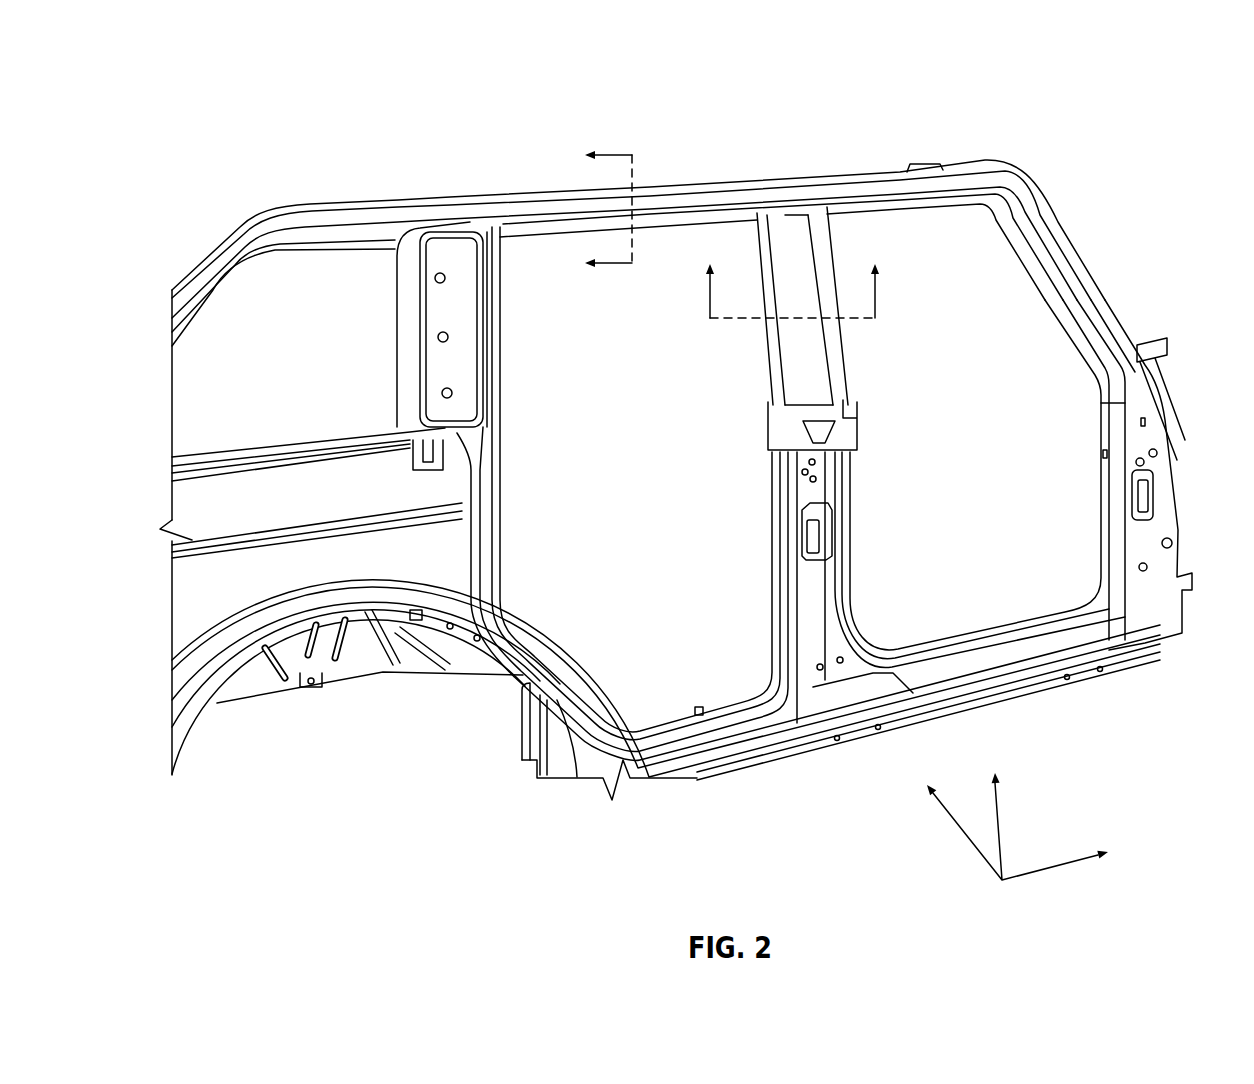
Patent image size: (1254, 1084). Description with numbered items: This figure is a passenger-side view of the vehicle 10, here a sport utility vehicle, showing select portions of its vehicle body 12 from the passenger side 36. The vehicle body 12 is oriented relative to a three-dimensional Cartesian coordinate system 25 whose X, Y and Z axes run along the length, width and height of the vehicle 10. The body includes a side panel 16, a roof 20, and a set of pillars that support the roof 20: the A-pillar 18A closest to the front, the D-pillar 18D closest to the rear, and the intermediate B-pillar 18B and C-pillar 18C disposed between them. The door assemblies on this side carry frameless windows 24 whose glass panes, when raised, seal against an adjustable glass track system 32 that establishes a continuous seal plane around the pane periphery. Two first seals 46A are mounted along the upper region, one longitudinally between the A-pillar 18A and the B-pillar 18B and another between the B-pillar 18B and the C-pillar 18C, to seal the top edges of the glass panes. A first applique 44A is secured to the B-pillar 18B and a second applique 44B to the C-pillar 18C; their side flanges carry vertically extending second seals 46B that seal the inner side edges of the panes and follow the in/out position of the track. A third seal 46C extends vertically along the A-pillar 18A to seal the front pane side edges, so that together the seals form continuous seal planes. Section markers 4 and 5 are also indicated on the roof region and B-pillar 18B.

The vehicle 10 is at (1078, 74).
The vehicle body 12 is at (640, 780).
The side panel 16 is at (207, 597).
The A-pillar 18A is at (1120, 322).
The B-pillar 18B is at (827, 483).
The C-pillar 18C is at (487, 520).
The D-pillar 18D is at (212, 290).
The roof 20 is at (472, 165).
The frameless window 24 is at (652, 262).
The Cartesian coordinate system 25 is at (995, 895).
The adjustable glass track system 32 is at (758, 200).
The passenger side 36 is at (1112, 676).
The first applique 44A is at (825, 333).
The second applique 44B is at (437, 357).
The first seal 46A is at (505, 245).
The second seal 46B is at (503, 372).
The third seal 46C is at (1065, 300).
The section line 4- 4 is at (596, 208).
The section line 5- 5 is at (793, 274).